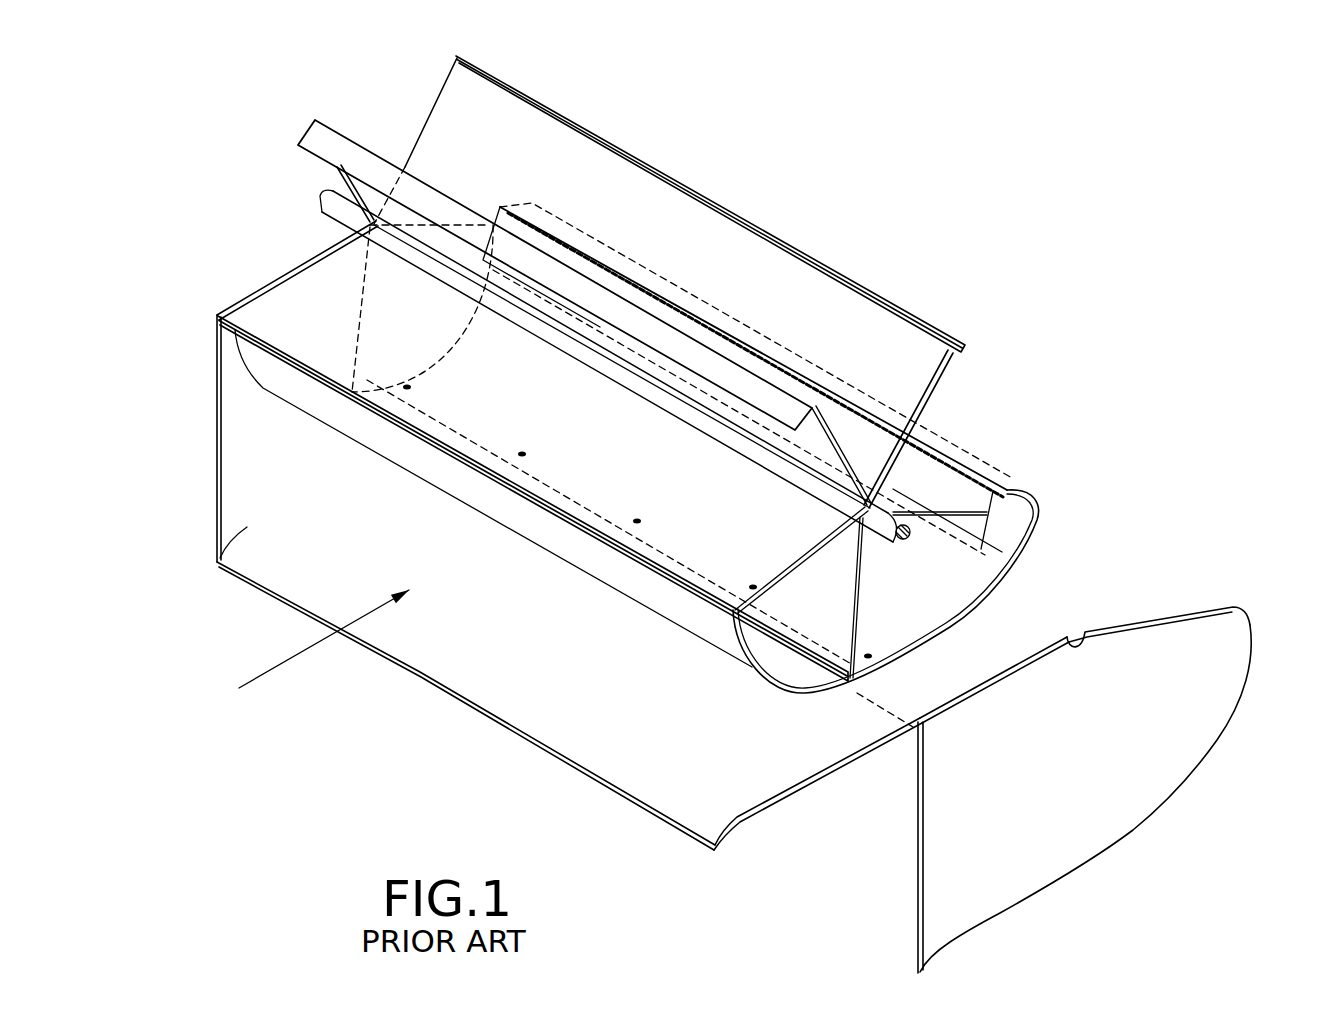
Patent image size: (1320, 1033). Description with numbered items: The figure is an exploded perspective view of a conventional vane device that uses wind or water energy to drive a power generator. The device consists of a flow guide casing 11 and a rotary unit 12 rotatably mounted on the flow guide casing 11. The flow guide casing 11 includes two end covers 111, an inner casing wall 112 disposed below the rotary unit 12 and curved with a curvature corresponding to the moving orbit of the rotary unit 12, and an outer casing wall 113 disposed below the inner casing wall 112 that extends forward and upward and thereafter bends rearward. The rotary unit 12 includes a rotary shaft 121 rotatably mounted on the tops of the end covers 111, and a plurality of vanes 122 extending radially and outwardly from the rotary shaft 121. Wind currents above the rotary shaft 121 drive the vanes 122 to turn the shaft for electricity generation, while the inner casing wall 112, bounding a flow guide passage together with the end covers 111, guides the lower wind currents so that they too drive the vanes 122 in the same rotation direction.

The flow guide casing 11 is at (421, 702).
The end covers 111 is at (243, 470).
The inner casing wall 112 is at (987, 567).
The outer casing wall 113 is at (858, 752).
The rotary unit 12 is at (1063, 347).
The rotary shaft 121 is at (865, 503).
The vanes 122 is at (822, 428).